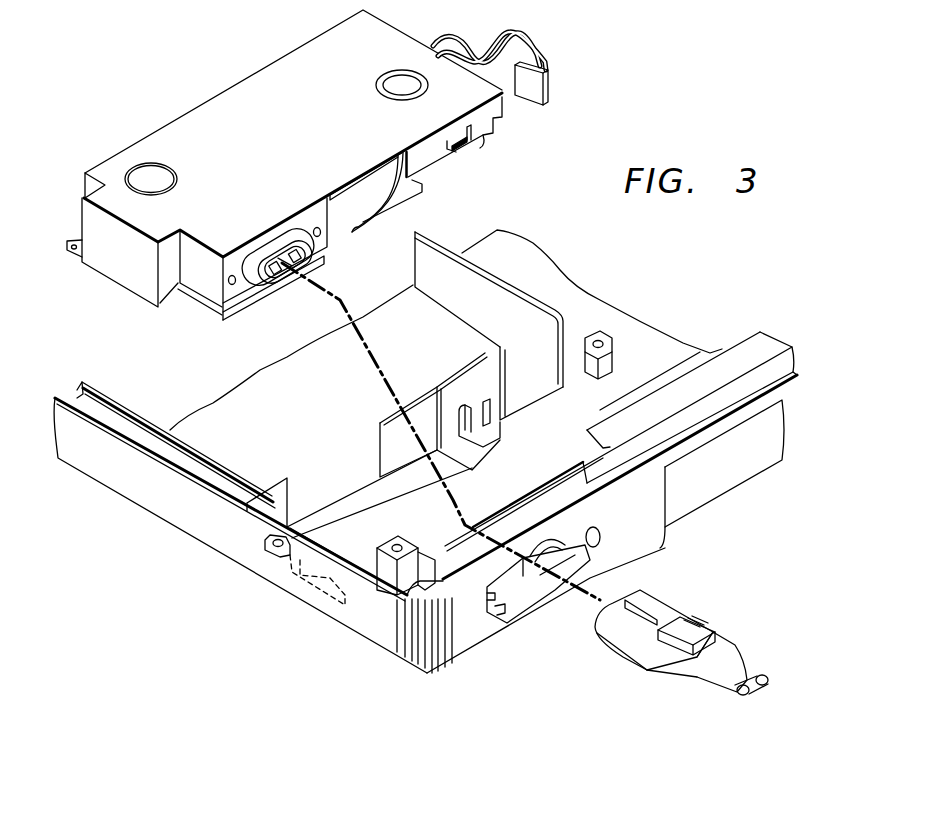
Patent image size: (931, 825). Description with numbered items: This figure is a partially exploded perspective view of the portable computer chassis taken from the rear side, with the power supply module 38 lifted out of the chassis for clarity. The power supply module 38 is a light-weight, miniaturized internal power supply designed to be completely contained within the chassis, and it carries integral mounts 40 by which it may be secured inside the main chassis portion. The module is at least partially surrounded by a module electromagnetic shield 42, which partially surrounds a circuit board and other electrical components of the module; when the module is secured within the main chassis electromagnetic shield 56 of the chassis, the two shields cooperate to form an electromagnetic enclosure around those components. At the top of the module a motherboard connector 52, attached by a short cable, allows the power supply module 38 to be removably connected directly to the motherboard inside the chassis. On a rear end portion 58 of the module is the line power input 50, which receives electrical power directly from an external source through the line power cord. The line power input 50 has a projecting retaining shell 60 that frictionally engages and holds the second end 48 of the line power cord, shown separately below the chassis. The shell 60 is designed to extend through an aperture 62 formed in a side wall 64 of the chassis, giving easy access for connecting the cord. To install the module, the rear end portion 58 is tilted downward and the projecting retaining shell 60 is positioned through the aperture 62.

The power supply module 38 is at (192, 97).
The module electromagnetic shield 42 is at (288, 62).
The mounts 40 is at (76, 243).
The rear end portion 58 is at (243, 246).
The projecting retaining shell 60 is at (287, 239).
The line power input 50 is at (273, 286).
The motherboard connector 52 is at (549, 87).
The main chassis electromagnetic shield 56 is at (568, 441).
The aperture 62 is at (553, 527).
The side wall 64 is at (478, 578).
The second end 48 is at (673, 612).